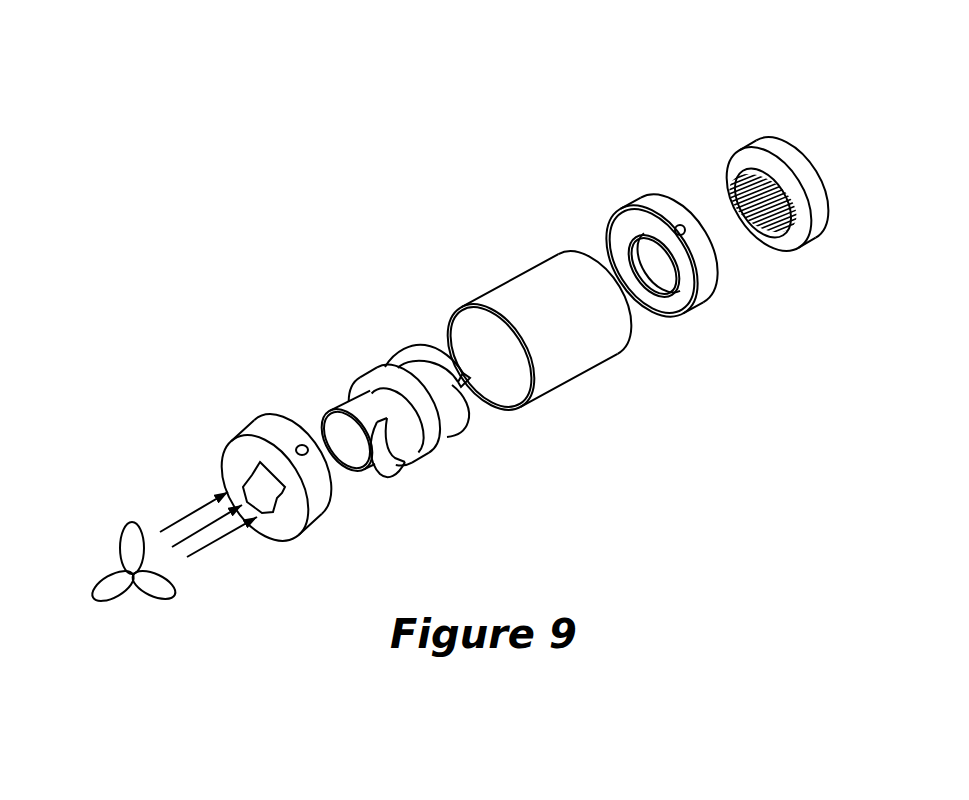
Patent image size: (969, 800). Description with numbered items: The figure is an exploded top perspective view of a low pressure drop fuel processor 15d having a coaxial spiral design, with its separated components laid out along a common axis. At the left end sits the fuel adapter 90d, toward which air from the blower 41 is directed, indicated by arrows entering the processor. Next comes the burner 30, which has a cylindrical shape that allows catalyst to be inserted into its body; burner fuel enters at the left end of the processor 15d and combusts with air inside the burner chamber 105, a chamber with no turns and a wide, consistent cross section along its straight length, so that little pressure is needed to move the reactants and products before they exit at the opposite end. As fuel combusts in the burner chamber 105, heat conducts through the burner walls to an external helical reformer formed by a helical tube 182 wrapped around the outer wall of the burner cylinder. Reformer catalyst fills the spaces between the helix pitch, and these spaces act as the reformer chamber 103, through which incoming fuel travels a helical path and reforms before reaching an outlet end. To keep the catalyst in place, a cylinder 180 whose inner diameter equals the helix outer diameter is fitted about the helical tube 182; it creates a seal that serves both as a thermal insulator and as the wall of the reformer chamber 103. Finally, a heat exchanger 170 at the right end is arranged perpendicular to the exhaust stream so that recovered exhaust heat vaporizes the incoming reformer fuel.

The low pressure drop fuel processor 15d is at (267, 110).
The heat exchanger 170 is at (743, 160).
The cylinder 180 is at (520, 298).
The helical tube 182 is at (418, 348).
The burner 30 is at (373, 389).
The burner chamber 105 is at (337, 427).
The reformer chamber 103 is at (405, 462).
The fuel adapter 90d is at (243, 452).
The blower 41 is at (103, 593).